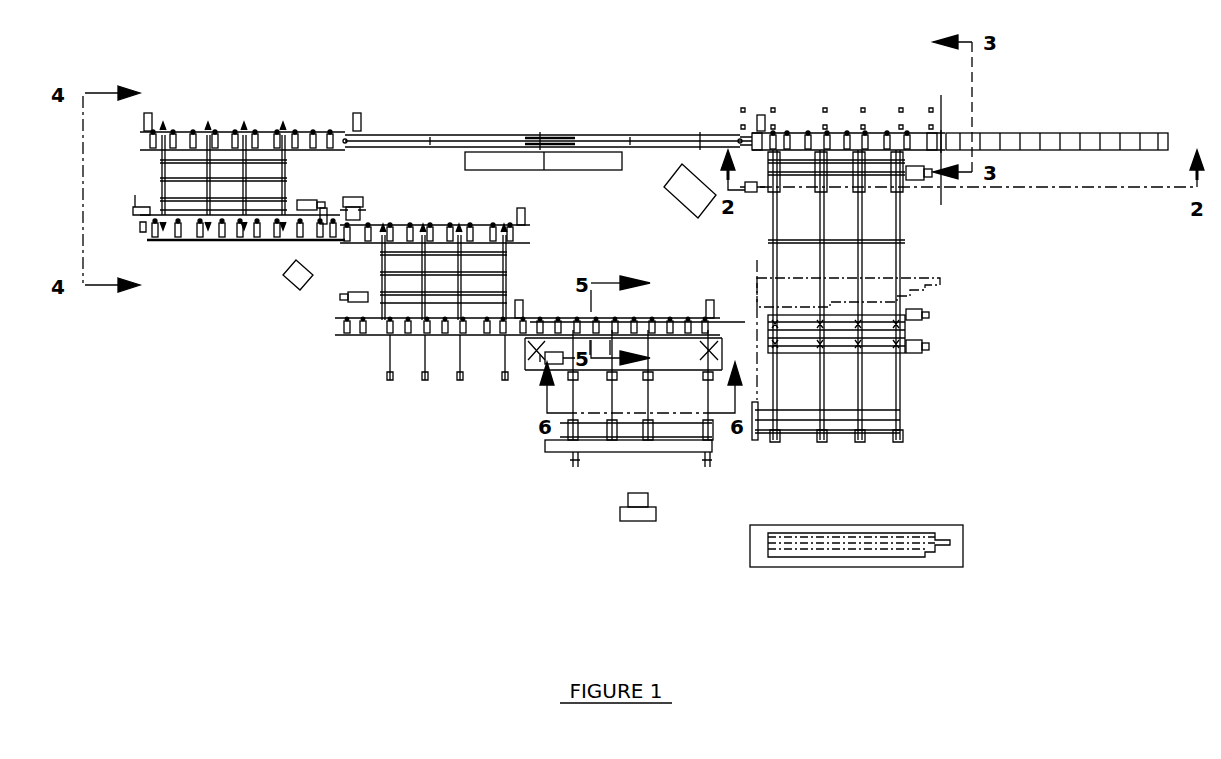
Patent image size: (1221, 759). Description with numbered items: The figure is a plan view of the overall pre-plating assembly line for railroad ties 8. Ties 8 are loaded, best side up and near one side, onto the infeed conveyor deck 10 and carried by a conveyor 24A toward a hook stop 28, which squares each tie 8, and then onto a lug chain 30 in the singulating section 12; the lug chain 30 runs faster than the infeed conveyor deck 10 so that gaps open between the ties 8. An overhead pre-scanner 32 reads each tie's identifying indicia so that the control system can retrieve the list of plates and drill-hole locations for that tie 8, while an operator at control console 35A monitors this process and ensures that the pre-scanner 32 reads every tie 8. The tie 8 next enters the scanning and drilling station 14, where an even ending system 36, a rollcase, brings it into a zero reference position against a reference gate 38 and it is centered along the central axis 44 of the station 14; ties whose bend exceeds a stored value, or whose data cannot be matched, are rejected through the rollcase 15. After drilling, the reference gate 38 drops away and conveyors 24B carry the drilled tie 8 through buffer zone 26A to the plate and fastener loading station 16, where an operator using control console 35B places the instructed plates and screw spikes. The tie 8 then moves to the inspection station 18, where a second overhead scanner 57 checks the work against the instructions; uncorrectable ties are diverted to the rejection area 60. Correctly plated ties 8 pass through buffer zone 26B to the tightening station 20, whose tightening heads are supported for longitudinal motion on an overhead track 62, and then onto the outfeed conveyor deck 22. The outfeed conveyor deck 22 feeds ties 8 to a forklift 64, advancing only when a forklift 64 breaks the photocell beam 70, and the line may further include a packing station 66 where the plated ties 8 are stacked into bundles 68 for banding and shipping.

The tie 8 is at (945, 283).
The infeed conveyor deck 10 is at (835, 430).
The singulating section 12 is at (900, 262).
The scanning and drilling station 14 is at (943, 140).
The rollcase 15 is at (1065, 150).
The plate and fastener loading station 16 is at (155, 238).
The inspection station 18 is at (352, 243).
The tightening station 20 is at (545, 362).
The outfeed conveyor deck 22 is at (715, 415).
The conveyor 24A is at (898, 378).
The conveyors 24B is at (405, 137).
The buffer zone 26A is at (163, 182).
The buffer zone 26B is at (380, 262).
The hook stop 28 is at (910, 345).
The lug chain 30 is at (905, 222).
The pre-scanner 32 is at (752, 193).
The control console 35A is at (682, 205).
The control console 35B is at (290, 280).
The even ending system 36 is at (838, 133).
The reference gate 38 is at (760, 115).
The central axis 44 is at (945, 115).
The second overhead scanner 57 is at (363, 208).
The rejection area 60 is at (423, 365).
The overhead track 62 is at (742, 320).
The forklift 64 is at (638, 520).
The packing station 66 is at (945, 530).
The bundles 68 is at (775, 553).
The photocell beam 70 is at (575, 462).